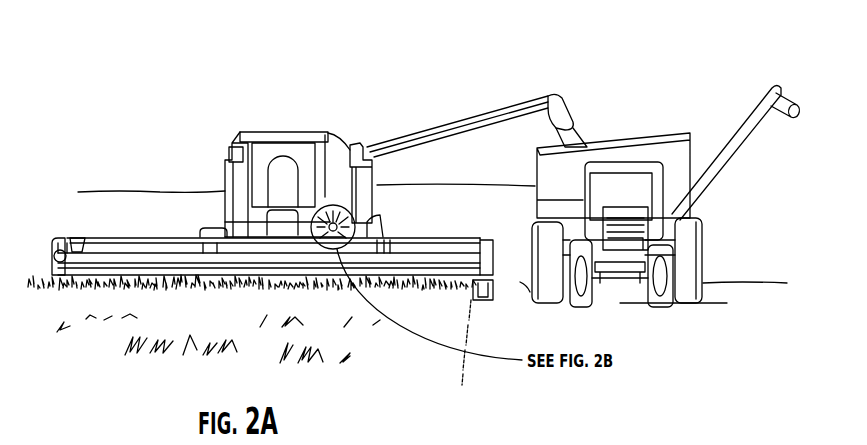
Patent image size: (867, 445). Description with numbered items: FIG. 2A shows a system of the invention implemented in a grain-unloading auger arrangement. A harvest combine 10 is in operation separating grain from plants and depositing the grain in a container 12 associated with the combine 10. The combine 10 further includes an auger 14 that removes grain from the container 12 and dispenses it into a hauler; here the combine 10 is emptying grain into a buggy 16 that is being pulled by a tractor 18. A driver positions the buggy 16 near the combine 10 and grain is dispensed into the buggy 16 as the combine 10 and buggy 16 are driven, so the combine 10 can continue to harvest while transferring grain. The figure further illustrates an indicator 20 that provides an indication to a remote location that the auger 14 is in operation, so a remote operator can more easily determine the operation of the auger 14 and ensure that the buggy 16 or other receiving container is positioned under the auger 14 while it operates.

The harvest combine 10 is at (319, 214).
The container 12 is at (268, 114).
The auger 14 is at (455, 120).
The buggy 16 is at (658, 132).
The tractor 18 is at (693, 208).
The indicator 20 is at (358, 222).